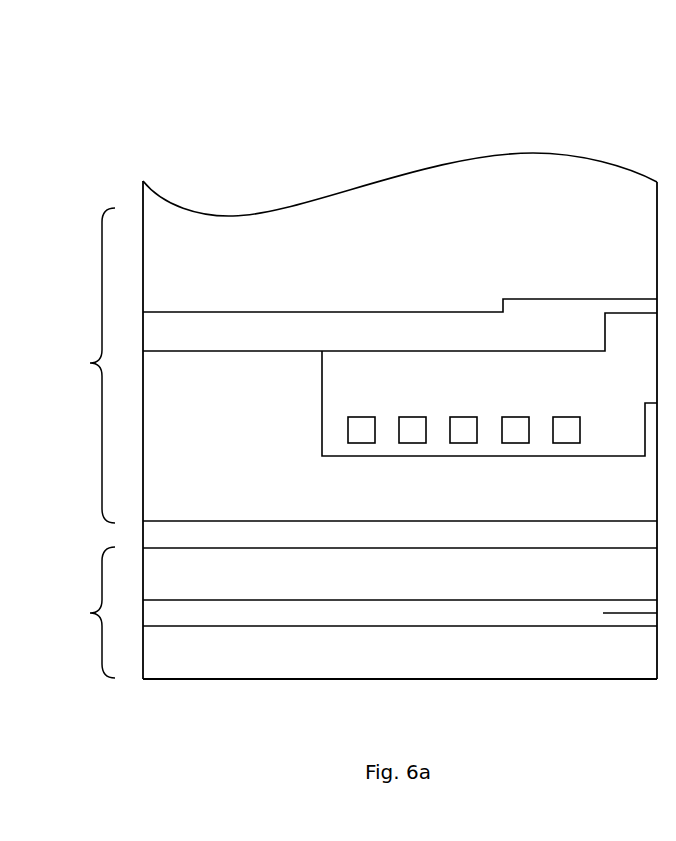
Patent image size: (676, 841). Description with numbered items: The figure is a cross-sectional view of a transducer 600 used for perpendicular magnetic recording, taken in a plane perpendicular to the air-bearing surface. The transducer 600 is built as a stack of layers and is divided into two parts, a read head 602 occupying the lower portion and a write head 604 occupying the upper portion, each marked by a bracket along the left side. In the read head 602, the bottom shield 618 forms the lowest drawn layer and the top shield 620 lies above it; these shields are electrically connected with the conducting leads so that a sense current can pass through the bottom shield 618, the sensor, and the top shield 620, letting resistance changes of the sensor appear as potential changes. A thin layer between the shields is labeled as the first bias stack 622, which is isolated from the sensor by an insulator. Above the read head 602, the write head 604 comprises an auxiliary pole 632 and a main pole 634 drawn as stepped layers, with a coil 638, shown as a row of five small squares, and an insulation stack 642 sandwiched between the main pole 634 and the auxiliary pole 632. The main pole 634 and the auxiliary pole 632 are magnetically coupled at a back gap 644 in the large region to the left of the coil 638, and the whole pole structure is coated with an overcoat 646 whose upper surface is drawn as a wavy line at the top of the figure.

The transducer 600 is at (178, 98).
The read head 602 is at (97, 582).
The write head 604 is at (95, 343).
The bottom shield 618 is at (400, 652).
The top shield 620 is at (400, 574).
The first bias stack 622 is at (675, 805).
The auxiliary pole 632 is at (400, 494).
The main pole 634 is at (620, 305).
The coil 638 is at (538, 419).
The insulation stack 642 is at (385, 378).
The back gap 644 is at (233, 392).
The overcoat 646 is at (400, 416).